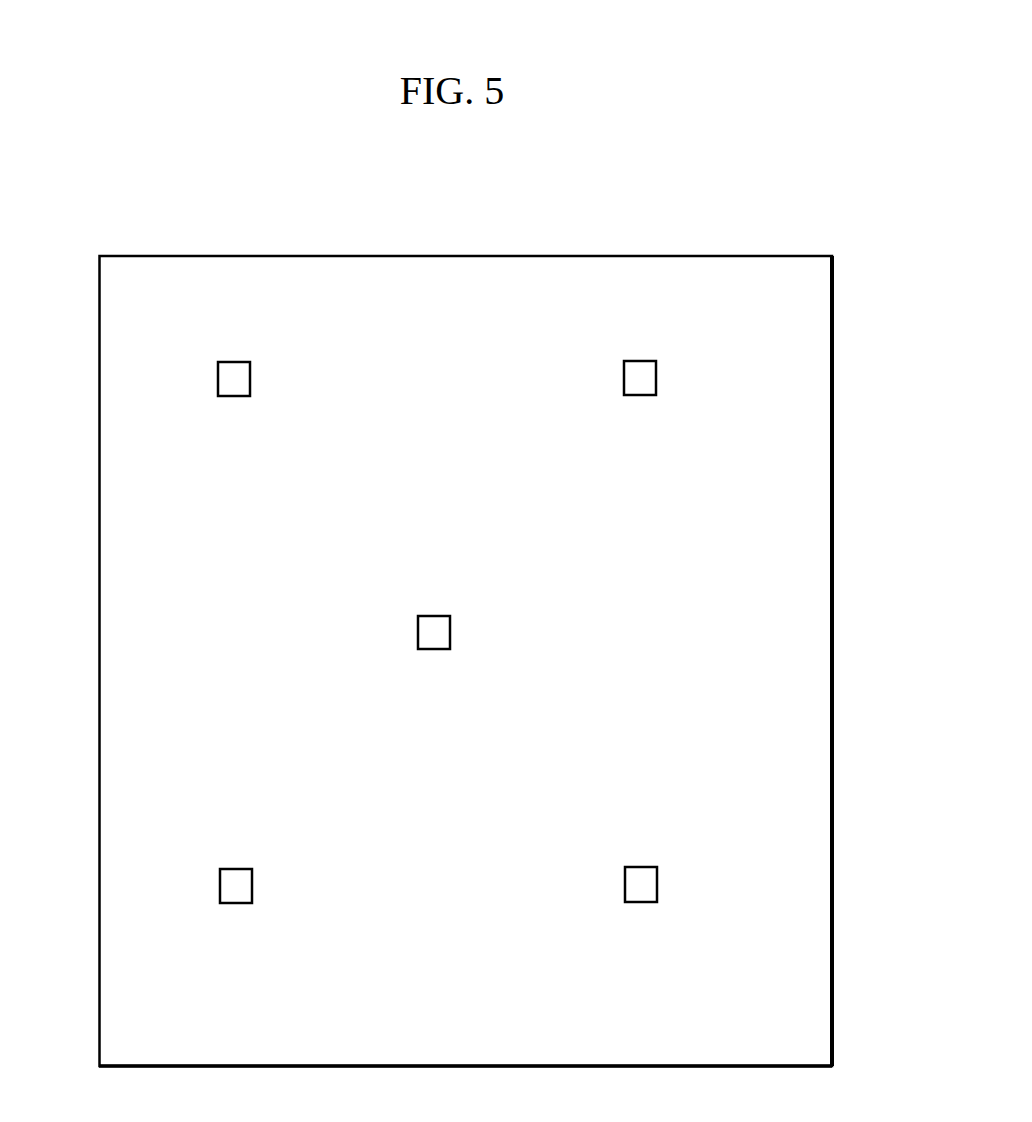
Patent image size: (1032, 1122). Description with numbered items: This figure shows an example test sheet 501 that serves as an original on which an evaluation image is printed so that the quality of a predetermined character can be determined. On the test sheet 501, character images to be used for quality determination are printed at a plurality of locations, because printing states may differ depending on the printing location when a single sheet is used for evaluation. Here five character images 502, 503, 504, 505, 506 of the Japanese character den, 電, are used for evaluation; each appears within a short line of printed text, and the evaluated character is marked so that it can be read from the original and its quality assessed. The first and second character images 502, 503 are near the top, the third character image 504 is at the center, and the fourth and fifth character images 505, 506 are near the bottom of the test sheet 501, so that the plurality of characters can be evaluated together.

The test sheet 501 is at (483, 255).
The character image 502 is at (234, 362).
The character image 503 is at (640, 361).
The character image 504 is at (436, 616).
The character image 505 is at (236, 869).
The character image 506 is at (640, 867).